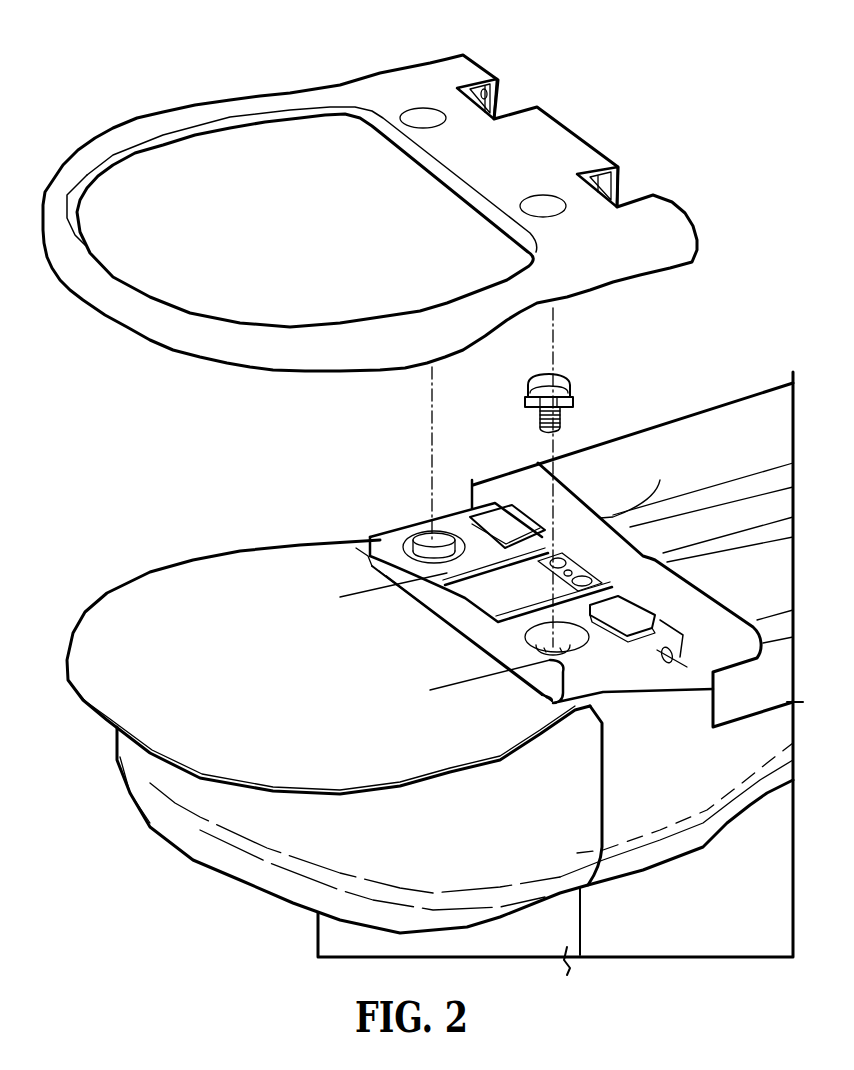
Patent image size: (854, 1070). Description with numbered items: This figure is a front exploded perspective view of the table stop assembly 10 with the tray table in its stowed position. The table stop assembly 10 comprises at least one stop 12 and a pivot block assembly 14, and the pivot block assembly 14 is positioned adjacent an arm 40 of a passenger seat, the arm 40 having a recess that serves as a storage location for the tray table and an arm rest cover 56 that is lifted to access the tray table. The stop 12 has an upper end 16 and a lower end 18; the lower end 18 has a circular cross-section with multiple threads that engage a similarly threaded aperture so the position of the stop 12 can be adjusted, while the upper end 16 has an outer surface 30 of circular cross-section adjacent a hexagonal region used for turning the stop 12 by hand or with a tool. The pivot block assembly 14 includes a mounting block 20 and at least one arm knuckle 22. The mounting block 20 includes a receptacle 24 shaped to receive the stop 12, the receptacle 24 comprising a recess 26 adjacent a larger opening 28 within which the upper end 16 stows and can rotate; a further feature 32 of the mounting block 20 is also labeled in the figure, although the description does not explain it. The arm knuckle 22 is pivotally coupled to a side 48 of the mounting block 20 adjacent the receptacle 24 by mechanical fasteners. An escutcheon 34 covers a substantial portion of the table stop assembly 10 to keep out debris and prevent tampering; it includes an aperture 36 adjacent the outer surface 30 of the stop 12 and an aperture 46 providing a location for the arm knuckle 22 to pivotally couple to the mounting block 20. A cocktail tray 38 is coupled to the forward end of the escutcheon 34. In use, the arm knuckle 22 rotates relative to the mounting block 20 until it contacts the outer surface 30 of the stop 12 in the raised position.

The table stop assembly 10 is at (380, 506).
The stop 12 is at (557, 380).
The pivot block assembly 14 is at (634, 660).
The upper end 16 is at (530, 393).
The lower end 18 is at (562, 427).
The mounting block 20 is at (655, 667).
The arm knuckle 22 is at (628, 607).
The receptacle 24 is at (445, 580).
The recess 26 is at (535, 642).
The larger opening 28 is at (548, 627).
The outer surface 30 is at (541, 377).
The mounting hole 32 is at (443, 540).
The escutcheon 34 is at (403, 87).
The aperture 36 is at (433, 120).
The cocktail tray 38 is at (57, 207).
The arm 40 is at (773, 507).
The aperture 46 is at (500, 100).
The side 48 is at (498, 538).
The arm rest cover 56 is at (725, 430).